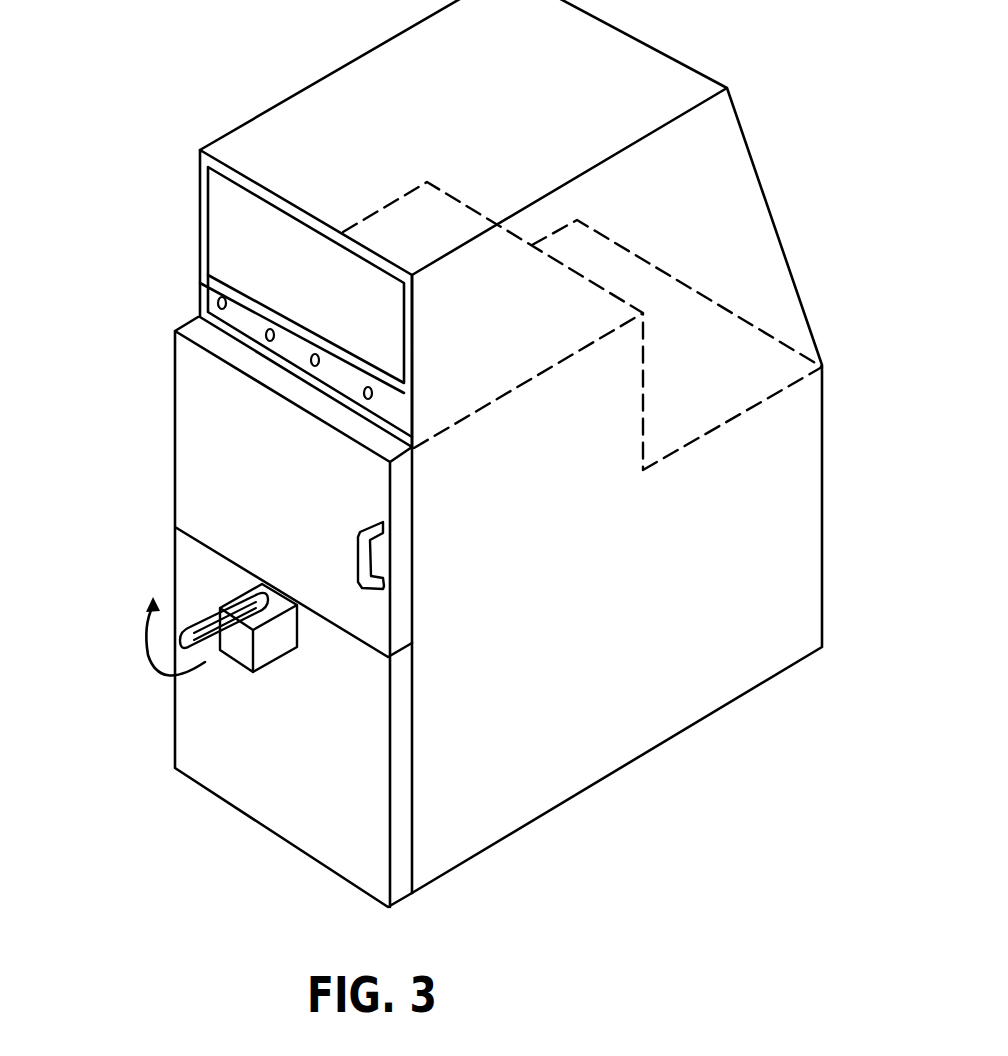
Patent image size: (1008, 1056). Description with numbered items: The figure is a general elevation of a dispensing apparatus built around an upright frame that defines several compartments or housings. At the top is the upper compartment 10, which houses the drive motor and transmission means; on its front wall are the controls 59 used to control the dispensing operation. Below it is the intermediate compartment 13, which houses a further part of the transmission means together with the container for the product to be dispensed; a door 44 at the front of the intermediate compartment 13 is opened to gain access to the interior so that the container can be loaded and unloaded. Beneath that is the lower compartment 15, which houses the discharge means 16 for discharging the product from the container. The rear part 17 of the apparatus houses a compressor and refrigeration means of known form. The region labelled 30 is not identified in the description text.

The upper compartment 10 is at (184, 224).
The intermediate compartment 13 is at (173, 444).
The lower compartment 15 is at (168, 566).
The discharge means 16 is at (281, 686).
The rear part 17 is at (790, 533).
The upper housing 30 is at (322, 102).
The door 44 is at (403, 602).
The controls 59 is at (240, 312).